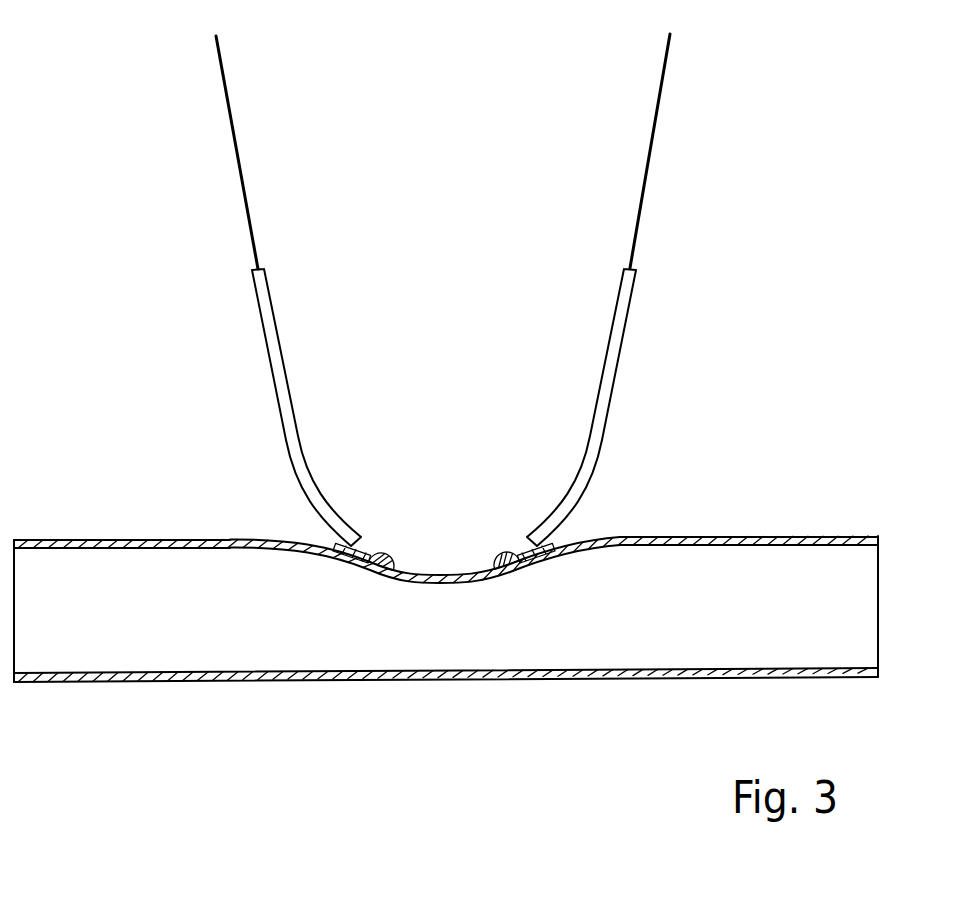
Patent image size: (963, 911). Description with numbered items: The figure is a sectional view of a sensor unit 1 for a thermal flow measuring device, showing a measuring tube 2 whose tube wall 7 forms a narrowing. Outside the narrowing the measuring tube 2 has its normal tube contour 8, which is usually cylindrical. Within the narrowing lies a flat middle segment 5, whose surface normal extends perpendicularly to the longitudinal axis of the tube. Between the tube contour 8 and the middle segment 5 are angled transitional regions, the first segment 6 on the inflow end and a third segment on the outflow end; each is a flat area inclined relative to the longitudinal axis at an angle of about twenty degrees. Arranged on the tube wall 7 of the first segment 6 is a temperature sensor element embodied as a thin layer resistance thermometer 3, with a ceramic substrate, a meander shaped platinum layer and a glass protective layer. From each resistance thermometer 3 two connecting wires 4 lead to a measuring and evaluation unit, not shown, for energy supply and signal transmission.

The sensor unit 1 is at (436, 457).
The measuring tube 2 is at (791, 568).
The resistance thermometer 3 is at (348, 564).
The connecting wires 4 is at (610, 386).
The middle segment 5 is at (448, 583).
The first segment 6 is at (372, 572).
The tube wall 7 is at (171, 547).
The tube contour 8 is at (657, 672).